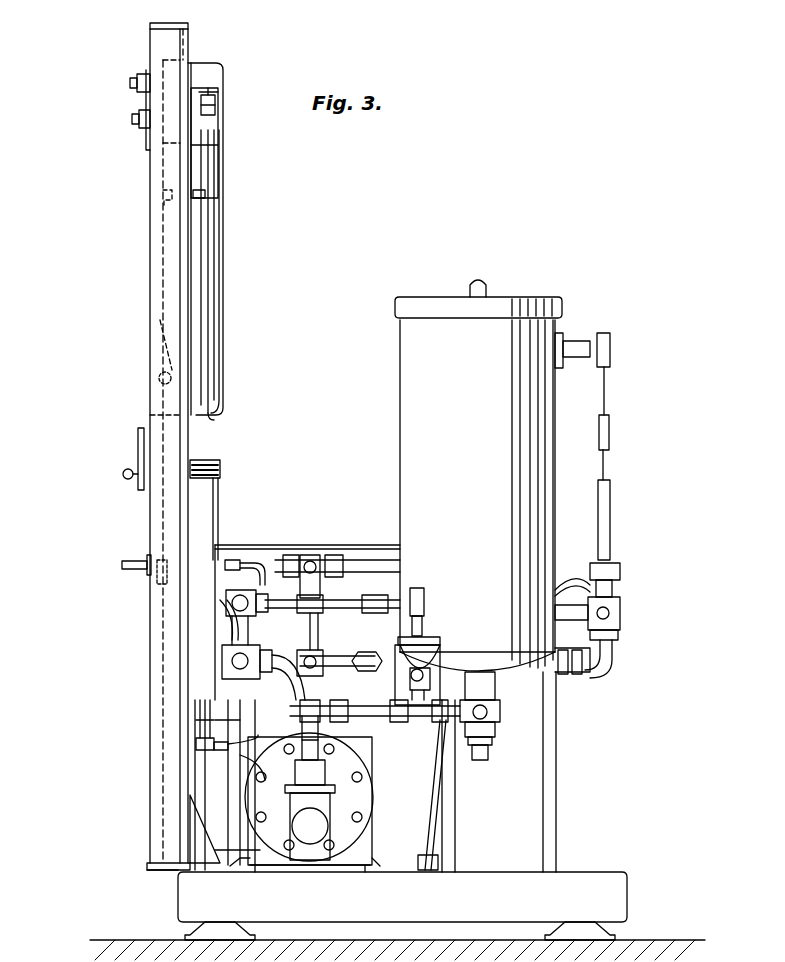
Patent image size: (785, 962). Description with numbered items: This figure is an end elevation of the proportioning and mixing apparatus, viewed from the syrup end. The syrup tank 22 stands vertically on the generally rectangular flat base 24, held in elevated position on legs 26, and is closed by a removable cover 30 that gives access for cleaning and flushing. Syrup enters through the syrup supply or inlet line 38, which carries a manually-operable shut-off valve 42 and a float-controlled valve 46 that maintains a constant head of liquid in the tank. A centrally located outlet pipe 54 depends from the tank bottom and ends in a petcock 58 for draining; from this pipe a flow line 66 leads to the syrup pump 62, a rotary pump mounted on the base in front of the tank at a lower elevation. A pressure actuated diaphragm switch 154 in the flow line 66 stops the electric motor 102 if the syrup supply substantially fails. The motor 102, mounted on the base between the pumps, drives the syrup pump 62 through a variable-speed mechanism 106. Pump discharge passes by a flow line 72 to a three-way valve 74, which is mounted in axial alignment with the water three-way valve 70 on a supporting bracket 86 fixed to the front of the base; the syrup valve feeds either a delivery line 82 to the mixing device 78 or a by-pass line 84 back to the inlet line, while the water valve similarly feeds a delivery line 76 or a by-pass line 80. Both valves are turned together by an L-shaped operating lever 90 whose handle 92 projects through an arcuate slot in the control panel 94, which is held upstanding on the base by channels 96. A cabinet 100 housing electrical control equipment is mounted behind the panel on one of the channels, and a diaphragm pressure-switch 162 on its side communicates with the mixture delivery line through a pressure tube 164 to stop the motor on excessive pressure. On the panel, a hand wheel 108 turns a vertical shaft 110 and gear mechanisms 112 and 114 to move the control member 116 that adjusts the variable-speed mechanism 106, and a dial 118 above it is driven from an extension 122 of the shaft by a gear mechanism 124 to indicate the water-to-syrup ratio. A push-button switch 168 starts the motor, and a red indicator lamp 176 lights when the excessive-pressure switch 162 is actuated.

The syrup tank 22 is at (400, 384).
The base 24 is at (627, 893).
The legs 26 is at (542, 806).
The removable cover 30 is at (392, 302).
The syrup supply or inlet line 38 is at (621, 613).
The manually-operable shut-off valve 42 is at (621, 632).
The valve 46 is at (616, 587).
The outlet pipe 54 is at (497, 690).
The petcock 58 is at (492, 750).
The syrup pump 62 is at (292, 822).
The flow line 66 is at (372, 730).
The three-way valve 70 is at (325, 656).
The flow line 72 is at (325, 684).
The three-way valve 74 is at (225, 660).
The delivery line 76 is at (335, 594).
The mixing device 78 is at (370, 560).
The by-pass line 80 is at (372, 675).
The delivery line 82 is at (228, 602).
The by-pass line 84 is at (360, 614).
The supporting bracket 86 is at (200, 808).
The L-shaped operating lever 90 is at (238, 565).
The handle 92 is at (132, 560).
The control panel 94 is at (148, 378).
The channels 96 is at (202, 612).
The cabinet 100 is at (225, 220).
The electric motor 102 is at (372, 782).
The variable-speed mechanism 106 is at (362, 805).
The hand wheel 108 is at (137, 455).
The vertical shaft 110 is at (215, 515).
The gear mechanism 112 is at (222, 470).
The gear mechanism 114 is at (205, 750).
The control member 116 is at (225, 770).
The dial 118 is at (146, 142).
The extension 122 is at (215, 255).
The gear mechanism 124 is at (220, 112).
The pressure actuated diaphragm switch 154 is at (426, 588).
The diaphragm pressure-switch 162 is at (198, 172).
The pressure tube 164 is at (200, 336).
The push-button switch 168 is at (139, 119).
The red indicator lamp 176 is at (136, 84).